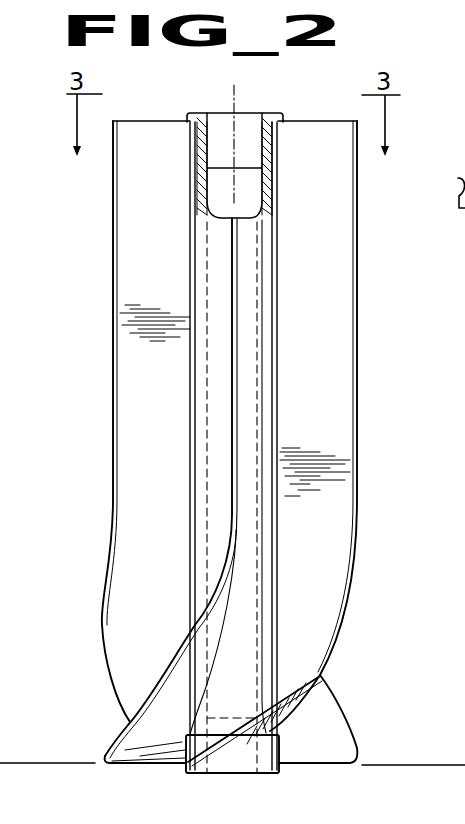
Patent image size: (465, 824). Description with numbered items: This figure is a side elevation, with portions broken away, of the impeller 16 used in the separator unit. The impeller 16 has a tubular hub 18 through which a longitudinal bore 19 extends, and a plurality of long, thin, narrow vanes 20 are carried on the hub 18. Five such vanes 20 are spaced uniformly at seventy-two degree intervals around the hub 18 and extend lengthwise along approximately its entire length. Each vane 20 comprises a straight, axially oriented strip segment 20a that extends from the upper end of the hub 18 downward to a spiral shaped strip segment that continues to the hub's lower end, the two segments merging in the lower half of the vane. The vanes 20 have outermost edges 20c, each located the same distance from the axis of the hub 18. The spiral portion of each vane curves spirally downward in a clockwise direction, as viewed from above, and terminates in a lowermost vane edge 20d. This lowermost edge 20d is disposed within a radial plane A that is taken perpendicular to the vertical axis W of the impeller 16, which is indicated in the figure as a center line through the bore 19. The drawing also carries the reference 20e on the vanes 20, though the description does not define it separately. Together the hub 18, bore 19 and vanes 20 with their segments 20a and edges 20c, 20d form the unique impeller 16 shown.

The impeller 16 is at (88, 266).
The tubular hub 18 is at (252, 256).
The longitudinal bore 19 is at (254, 190).
The vanes 20 is at (229, 281).
The straight, axially oriented strip segments 20a is at (238, 300).
The outermost edges 20c is at (233, 442).
The lowermost vane edge 20d is at (282, 772).
The blade inner edge 20e is at (196, 522).
The vertical axis W is at (237, 96).
The radial plane A is at (410, 765).